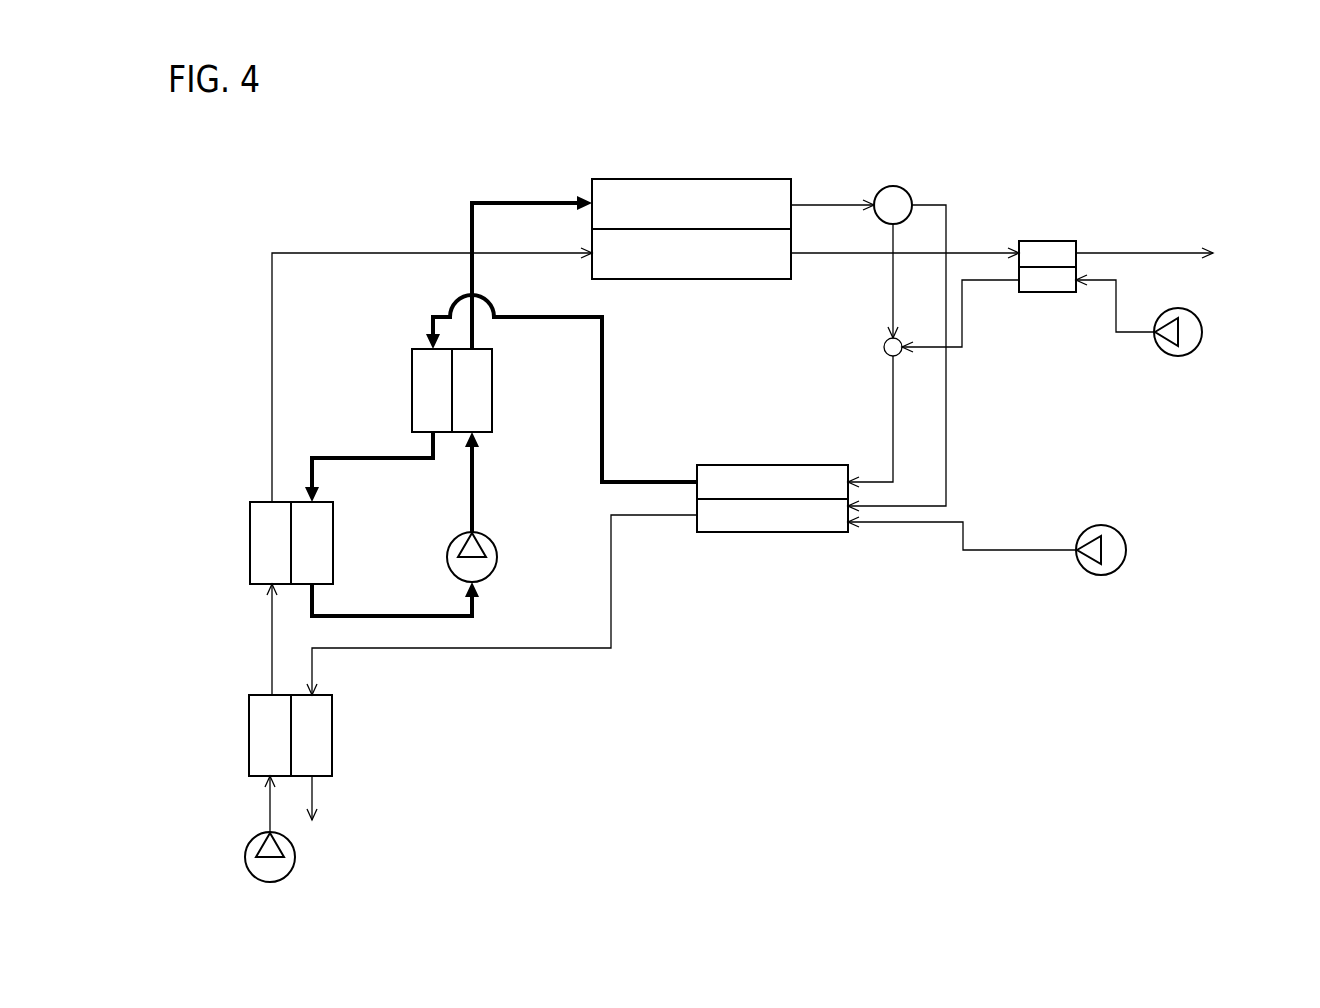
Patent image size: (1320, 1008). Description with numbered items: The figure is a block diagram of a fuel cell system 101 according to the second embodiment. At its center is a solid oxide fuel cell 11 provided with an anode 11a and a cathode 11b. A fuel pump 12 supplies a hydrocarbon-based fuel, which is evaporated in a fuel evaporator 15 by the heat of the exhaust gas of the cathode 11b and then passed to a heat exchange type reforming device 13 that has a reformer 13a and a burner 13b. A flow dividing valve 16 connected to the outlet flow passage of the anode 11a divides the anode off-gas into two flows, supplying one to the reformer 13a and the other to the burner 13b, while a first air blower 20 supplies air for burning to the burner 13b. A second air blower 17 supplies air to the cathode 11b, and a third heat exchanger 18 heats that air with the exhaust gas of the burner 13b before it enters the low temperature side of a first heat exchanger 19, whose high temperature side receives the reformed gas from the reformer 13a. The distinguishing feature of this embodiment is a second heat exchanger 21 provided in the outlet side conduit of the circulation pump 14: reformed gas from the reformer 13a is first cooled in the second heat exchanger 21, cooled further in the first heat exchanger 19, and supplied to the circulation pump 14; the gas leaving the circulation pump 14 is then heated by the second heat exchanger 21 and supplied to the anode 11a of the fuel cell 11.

The fuel cell system 101 is at (1029, 142).
The solid oxide fuel cell 11 is at (691, 174).
The anode 11a is at (693, 181).
The cathode 11b is at (754, 241).
The fuel pump 12 is at (1203, 332).
The heat exchange type reforming device 13 is at (772, 447).
The reformer 13a is at (753, 466).
The burner 13b is at (730, 412).
The circulation pump 14 is at (497, 557).
The fuel evaporator 15 is at (1048, 241).
The flow dividing valve 16 is at (892, 185).
The second air blower 17 is at (245, 857).
The third heat exchanger 18 is at (249, 738).
The first heat exchanger 19 is at (250, 553).
The first air blower 20 is at (1126, 551).
The second heat exchanger 21 is at (412, 386).